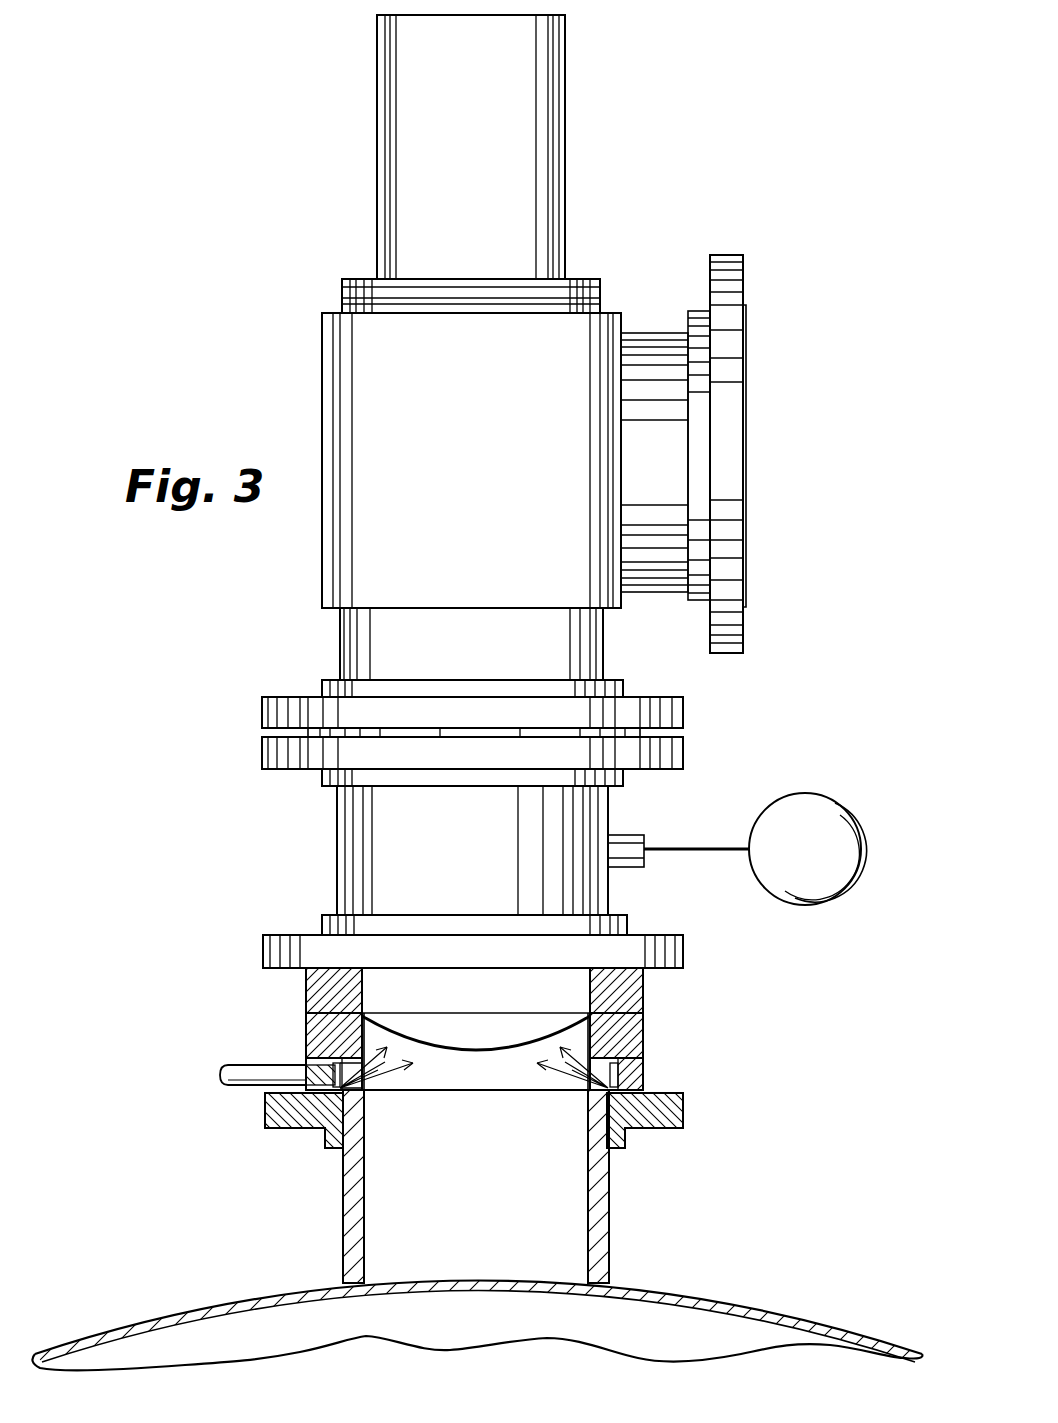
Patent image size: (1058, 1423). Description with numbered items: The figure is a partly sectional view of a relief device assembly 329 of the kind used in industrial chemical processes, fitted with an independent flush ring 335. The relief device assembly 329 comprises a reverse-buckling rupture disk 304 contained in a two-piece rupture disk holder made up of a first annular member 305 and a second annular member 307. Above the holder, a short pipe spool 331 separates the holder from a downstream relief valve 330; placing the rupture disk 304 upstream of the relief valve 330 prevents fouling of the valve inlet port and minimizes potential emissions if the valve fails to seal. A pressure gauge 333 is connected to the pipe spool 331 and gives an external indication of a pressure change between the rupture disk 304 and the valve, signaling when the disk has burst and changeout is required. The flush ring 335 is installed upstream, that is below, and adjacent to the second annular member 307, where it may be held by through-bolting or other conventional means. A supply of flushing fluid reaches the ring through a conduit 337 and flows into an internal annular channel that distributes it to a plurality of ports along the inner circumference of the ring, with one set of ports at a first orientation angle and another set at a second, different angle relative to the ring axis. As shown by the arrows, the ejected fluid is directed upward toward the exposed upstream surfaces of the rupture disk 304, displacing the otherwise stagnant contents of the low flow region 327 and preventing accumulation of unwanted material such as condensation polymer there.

The reverse-buckling rupture disk 304 is at (385, 1030).
The first annular member 305 is at (645, 1000).
The second annular member 307 is at (645, 1037).
The low flow region 327 is at (492, 1097).
The relief device assembly 329 is at (812, 741).
The relief valve 330 is at (620, 316).
The pipe spool 331 is at (337, 838).
The pressure gauge 333 is at (812, 907).
The flush ring 335 is at (645, 1075).
The conduit 337 is at (241, 1070).